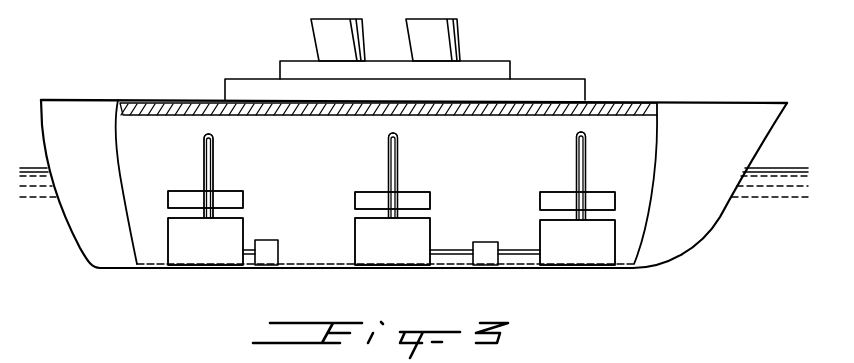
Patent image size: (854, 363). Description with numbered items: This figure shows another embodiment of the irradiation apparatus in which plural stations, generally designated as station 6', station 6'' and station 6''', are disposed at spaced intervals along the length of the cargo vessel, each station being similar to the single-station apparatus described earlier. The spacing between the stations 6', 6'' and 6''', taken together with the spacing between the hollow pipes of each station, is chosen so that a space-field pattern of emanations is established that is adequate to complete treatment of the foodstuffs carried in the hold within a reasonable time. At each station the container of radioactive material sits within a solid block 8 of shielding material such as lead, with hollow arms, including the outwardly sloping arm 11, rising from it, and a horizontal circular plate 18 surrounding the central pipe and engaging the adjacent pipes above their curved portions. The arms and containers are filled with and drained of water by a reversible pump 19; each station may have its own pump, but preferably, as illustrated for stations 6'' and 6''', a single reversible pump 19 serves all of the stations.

The station 6' is at (205, 199).
The station 6'' is at (393, 199).
The station 6''' is at (579, 198).
The block 8 is at (168, 238).
The arm 11 is at (204, 156).
The horizontal circular plate 18 is at (210, 207).
The reversible pump 19 is at (276, 240).